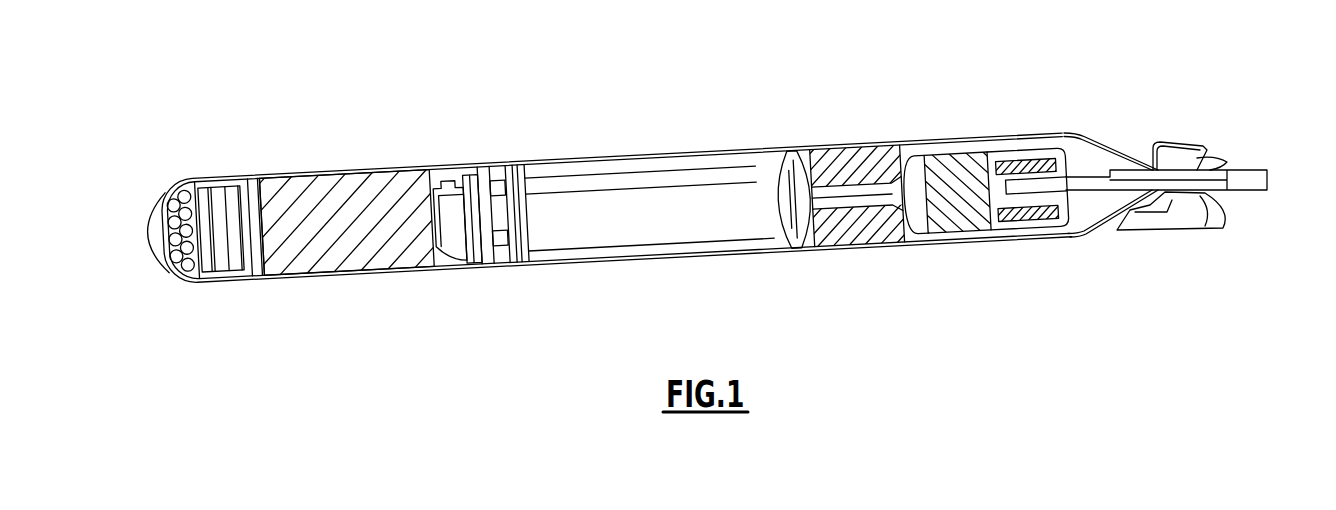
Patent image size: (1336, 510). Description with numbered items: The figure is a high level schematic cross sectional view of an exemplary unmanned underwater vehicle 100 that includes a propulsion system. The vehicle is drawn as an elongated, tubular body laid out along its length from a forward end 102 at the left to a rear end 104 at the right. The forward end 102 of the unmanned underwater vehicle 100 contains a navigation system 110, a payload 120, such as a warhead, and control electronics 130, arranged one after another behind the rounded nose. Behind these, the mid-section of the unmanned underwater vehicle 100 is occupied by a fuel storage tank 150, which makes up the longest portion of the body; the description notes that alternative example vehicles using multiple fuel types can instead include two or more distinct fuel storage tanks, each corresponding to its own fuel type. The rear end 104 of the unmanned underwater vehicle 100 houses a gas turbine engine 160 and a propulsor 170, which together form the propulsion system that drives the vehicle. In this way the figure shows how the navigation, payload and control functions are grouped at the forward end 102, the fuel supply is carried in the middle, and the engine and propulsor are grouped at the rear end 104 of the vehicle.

The unmanned underwater vehicle 100 is at (615, 158).
The forward end 102 is at (152, 222).
The rear end 104 is at (1251, 137).
The navigation system 110 is at (233, 263).
The payload 120 is at (353, 185).
The control electronics 130 is at (473, 252).
The fuel storage tank 150 is at (731, 225).
The gas turbine engine 160 is at (963, 226).
The propulsor 170 is at (1182, 222).